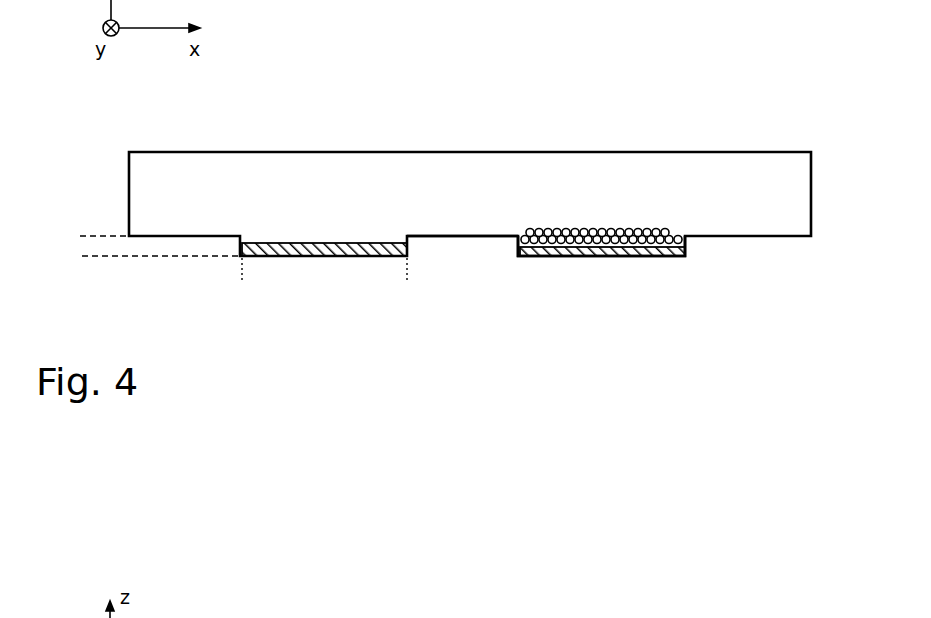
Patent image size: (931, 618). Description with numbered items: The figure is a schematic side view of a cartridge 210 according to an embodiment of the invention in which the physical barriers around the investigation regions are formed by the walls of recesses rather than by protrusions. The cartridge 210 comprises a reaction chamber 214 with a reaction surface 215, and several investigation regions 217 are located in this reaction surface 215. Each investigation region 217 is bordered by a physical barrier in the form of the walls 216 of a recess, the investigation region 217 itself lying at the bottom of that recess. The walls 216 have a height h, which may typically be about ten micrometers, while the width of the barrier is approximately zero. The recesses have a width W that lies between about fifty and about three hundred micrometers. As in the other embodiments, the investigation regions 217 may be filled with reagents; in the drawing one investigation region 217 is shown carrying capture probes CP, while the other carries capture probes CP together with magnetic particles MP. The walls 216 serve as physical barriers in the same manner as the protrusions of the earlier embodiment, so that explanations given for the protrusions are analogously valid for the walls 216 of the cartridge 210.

The cartridge 210 is at (756, 138).
The reaction chamber 214 is at (185, 186).
The reaction surface 215 is at (439, 220).
The walls 216 is at (688, 240).
The investigation regions 217 is at (407, 306).
The capture probes CP is at (315, 243).
The magnetic particles MP is at (577, 228).
The height h is at (92, 205).
The width W is at (399, 272).